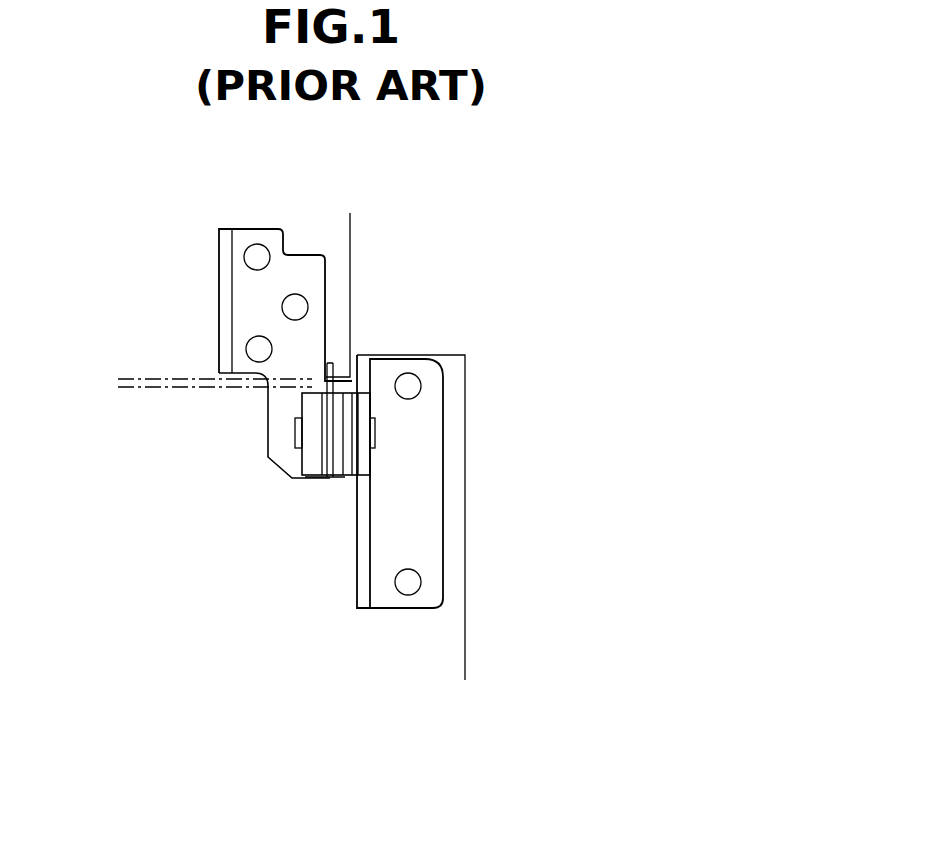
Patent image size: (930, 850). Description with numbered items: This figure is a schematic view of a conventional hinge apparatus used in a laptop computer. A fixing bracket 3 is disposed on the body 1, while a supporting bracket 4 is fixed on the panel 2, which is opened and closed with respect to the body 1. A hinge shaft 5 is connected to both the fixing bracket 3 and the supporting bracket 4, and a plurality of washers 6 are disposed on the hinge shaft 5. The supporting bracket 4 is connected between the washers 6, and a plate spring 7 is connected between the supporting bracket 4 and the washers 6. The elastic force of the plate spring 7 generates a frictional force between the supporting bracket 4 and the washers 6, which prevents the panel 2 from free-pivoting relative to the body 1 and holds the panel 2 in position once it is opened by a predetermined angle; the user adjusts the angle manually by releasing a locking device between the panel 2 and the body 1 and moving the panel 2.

The body 1 is at (458, 587).
The panel 2 is at (345, 298).
The fixing bracket 3 is at (428, 482).
The supporting bracket 4 is at (305, 267).
The hinge shaft 5 is at (295, 432).
The washers 6 is at (353, 463).
The plate spring 7 is at (322, 407).